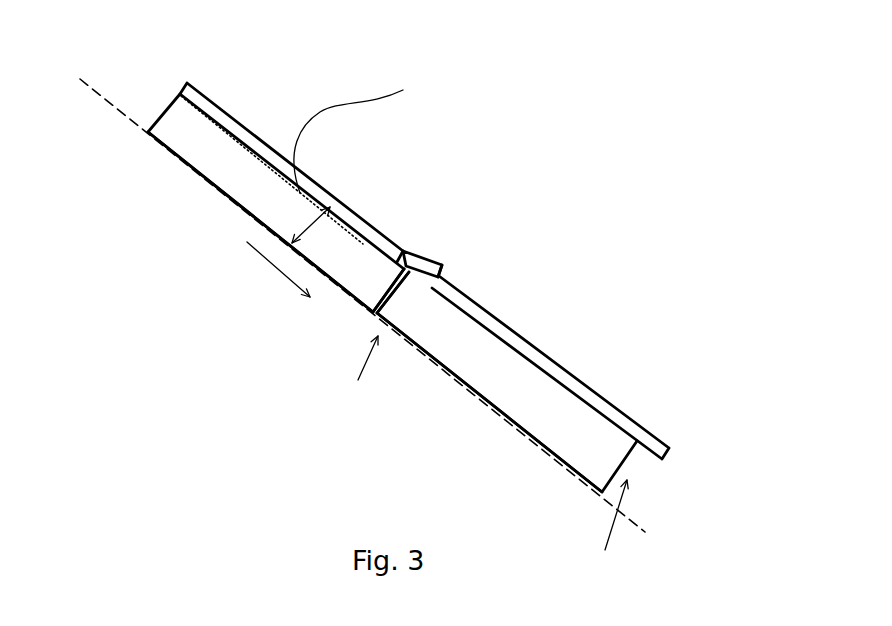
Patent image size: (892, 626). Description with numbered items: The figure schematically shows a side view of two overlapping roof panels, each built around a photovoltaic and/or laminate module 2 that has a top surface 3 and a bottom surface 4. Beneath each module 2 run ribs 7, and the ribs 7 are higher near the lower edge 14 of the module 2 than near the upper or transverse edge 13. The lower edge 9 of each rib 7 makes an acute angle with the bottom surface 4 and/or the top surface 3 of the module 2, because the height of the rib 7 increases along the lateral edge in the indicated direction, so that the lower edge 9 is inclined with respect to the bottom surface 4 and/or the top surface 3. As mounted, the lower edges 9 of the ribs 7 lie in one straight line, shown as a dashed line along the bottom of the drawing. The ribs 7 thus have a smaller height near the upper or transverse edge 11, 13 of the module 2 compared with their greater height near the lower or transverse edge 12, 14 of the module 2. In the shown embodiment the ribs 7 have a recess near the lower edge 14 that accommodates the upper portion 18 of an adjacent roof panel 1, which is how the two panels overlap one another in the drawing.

The roof panel 1 is at (436, 322).
The photovoltaic and/or laminate module 2 is at (492, 261).
The top surface 3 is at (443, 265).
The bottom surface 4 is at (383, 241).
The rib 7 is at (392, 293).
The lower edge of rib 9 is at (256, 218).
The upper or transverse edge 11 is at (184, 83).
The lower or transverse edge 12 is at (668, 455).
The upper or transverse edge 13 is at (410, 249).
The lower edge 14 is at (439, 277).
The upper portion of adjacent roof panel 18 is at (396, 287).